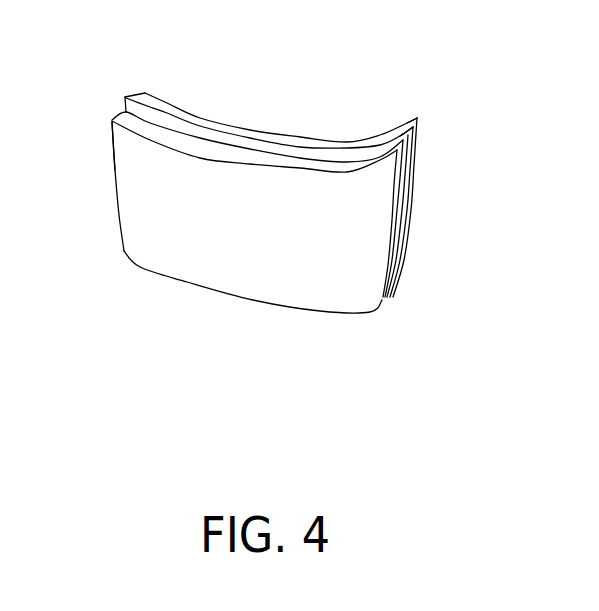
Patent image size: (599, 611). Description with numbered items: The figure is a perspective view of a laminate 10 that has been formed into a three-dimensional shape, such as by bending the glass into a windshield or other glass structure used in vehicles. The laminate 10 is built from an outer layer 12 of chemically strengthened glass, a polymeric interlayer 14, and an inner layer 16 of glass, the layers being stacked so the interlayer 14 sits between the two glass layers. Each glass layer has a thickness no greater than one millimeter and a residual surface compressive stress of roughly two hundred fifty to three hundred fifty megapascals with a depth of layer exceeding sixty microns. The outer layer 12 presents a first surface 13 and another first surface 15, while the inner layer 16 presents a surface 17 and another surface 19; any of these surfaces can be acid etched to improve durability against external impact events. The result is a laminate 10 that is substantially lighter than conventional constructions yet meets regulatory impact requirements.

The laminate 10 is at (208, 326).
The outer layer 12 is at (388, 293).
The first surface 13 is at (112, 156).
The polymeric interlayer 14 is at (159, 130).
The first surface 15 is at (211, 153).
The inner layer 16 is at (148, 93).
The surface 17 is at (418, 118).
The surface 19 is at (304, 140).